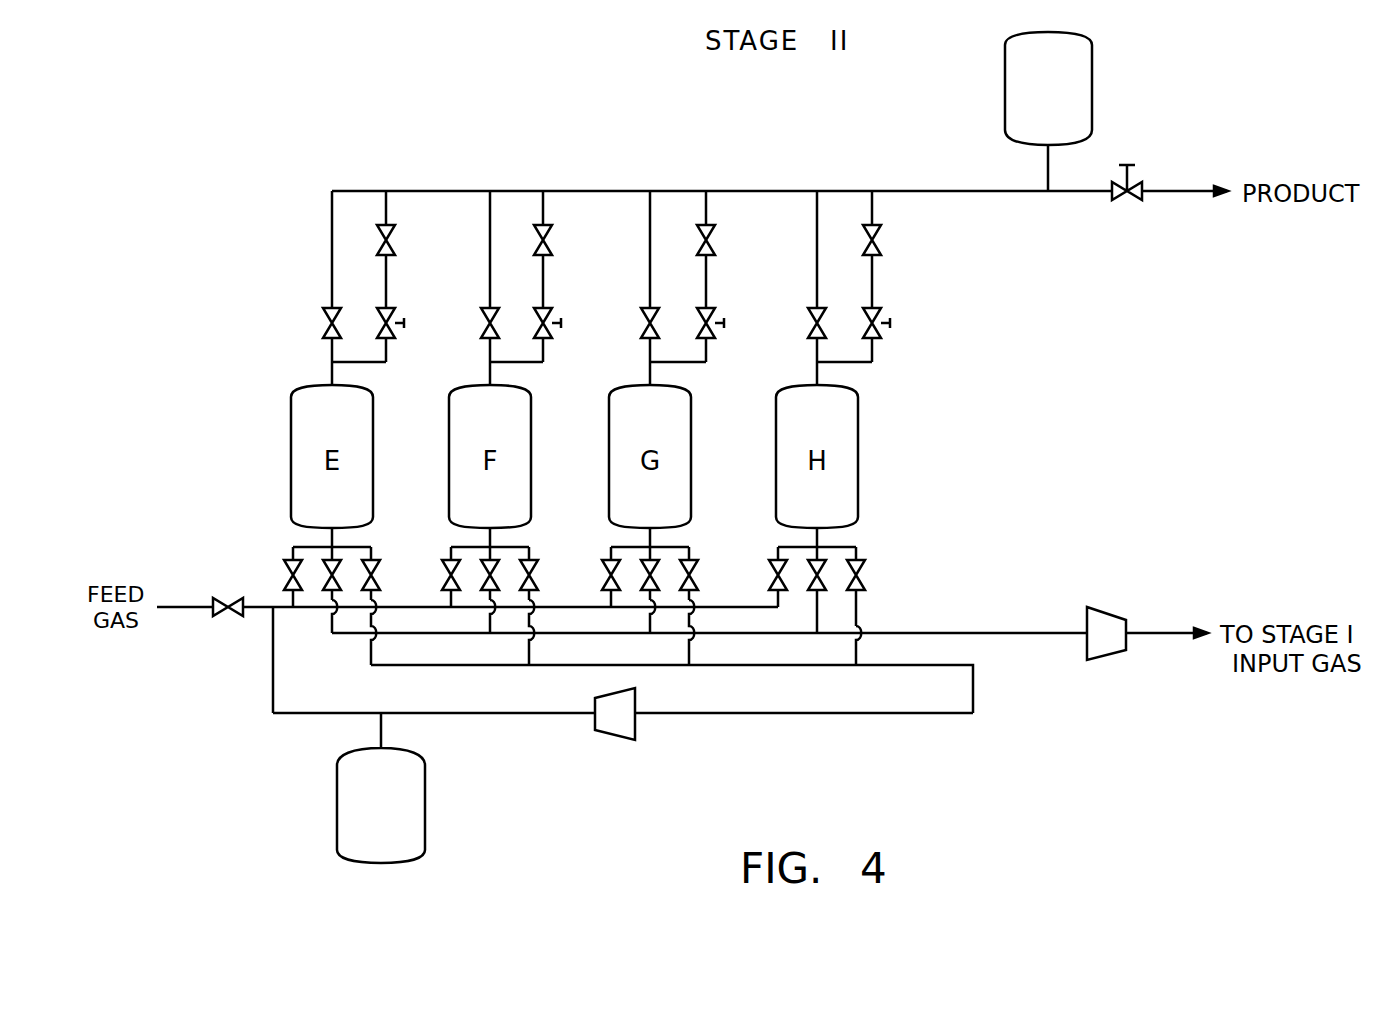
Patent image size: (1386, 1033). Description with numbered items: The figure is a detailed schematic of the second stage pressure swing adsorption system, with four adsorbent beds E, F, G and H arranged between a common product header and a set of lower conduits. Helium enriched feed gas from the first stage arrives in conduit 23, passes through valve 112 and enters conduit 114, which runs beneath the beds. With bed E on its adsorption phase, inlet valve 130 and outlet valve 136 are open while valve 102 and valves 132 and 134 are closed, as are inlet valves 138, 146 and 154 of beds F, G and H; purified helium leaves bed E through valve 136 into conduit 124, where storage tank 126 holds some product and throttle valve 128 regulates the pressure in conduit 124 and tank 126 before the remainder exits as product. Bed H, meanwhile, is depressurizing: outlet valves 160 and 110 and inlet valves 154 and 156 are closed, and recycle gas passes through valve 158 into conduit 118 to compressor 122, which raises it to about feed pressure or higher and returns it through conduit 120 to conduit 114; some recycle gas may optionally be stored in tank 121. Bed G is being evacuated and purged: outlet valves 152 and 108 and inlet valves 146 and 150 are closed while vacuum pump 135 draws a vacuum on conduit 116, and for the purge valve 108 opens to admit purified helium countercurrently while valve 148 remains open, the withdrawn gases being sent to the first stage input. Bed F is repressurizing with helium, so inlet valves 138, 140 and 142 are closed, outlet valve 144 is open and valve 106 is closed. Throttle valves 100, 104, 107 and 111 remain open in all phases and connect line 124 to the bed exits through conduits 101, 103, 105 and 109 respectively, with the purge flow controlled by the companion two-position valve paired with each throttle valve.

The conduit 23 is at (186, 610).
The throttle valve 100 is at (395, 333).
The conduit 101 is at (373, 364).
The valve 102 is at (396, 231).
The conduit 103 is at (531, 364).
The throttle valve 104 is at (552, 333).
The conduit 105 is at (693, 364).
The valve 106 is at (552, 231).
The throttle valve 107 is at (715, 333).
The valve 108 is at (715, 231).
The conduit 109 is at (858, 364).
The outlet valve 110 is at (881, 231).
The throttle valve 111 is at (881, 333).
The valve 112 is at (237, 614).
The conduit 114 is at (259, 605).
The conduit 116 is at (1021, 632).
The conduit 118 is at (453, 667).
The conduit 120 is at (522, 714).
The tank 121 is at (347, 808).
The compressor 122 is at (615, 728).
The conduit 124 is at (715, 190).
The storage tank 126 is at (1078, 88).
The throttle valve 128 is at (1135, 200).
The inlet valve 130 is at (289, 565).
The valve 132 is at (330, 560).
The valve 134 is at (378, 566).
The vacuum pump 135 is at (1105, 648).
The outlet valve 136 is at (325, 318).
The inlet valve 138 is at (448, 587).
The inlet valve 140 is at (497, 565).
The inlet valve 142 is at (538, 588).
The outlet valve 144 is at (484, 318).
The inlet valve 146 is at (613, 565).
The valve 148 is at (660, 563).
The inlet valve 150 is at (698, 565).
The outlet valve 152 is at (643, 318).
The inlet valve 154 is at (770, 588).
The inlet valve 156 is at (825, 560).
The valve 158 is at (864, 584).
The outlet valve 160 is at (810, 318).